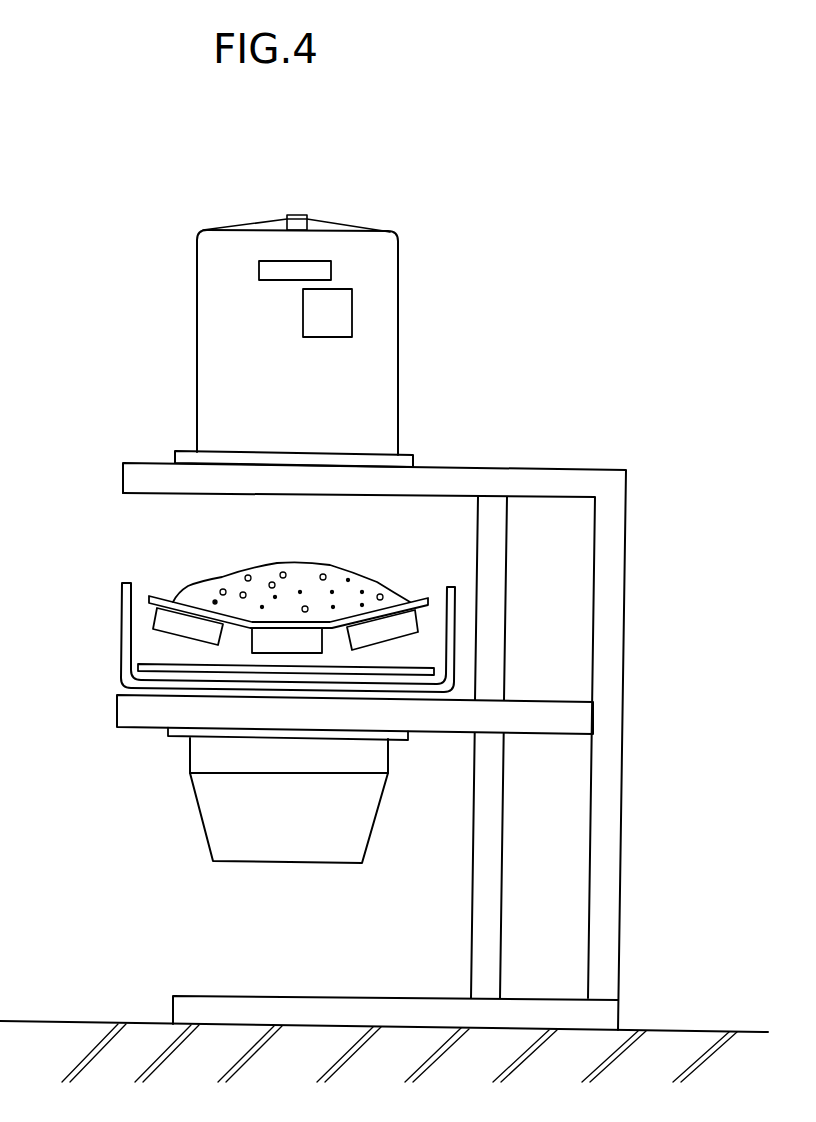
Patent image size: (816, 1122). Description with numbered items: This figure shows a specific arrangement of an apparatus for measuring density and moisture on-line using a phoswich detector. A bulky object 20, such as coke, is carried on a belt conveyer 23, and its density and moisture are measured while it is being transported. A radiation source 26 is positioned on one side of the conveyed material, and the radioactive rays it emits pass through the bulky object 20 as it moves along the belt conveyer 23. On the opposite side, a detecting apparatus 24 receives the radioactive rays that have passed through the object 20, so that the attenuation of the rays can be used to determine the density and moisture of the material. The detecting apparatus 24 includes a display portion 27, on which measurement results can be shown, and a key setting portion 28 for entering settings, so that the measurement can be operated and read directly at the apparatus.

The bulky object 20 is at (220, 578).
The belt conveyer 23 is at (158, 609).
The detecting apparatus 24 is at (487, 263).
The radiation source 26 is at (200, 820).
The display portion 27 is at (318, 270).
The key setting portion 28 is at (342, 305).